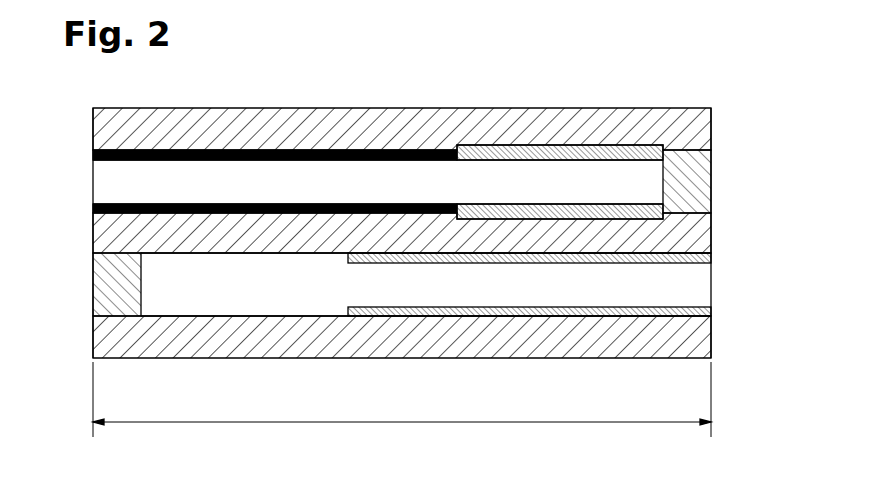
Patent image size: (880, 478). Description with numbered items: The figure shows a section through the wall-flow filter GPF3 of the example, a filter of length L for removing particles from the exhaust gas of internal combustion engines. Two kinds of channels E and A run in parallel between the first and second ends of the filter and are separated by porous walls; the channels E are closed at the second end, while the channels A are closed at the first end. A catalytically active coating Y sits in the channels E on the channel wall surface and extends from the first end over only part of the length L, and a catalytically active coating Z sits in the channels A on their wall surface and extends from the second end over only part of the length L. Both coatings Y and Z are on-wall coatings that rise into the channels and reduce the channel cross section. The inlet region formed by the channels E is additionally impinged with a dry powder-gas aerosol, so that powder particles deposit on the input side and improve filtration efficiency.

The catalytically active coating Y is at (93, 156).
The channels (inlet channels) E is at (413, 194).
The plug closing the first channel P is at (623, 150).
The channels (outlet channels) A is at (413, 297).
The catalytically active coating Z is at (711, 263).
The length of the wall-flow filter L is at (402, 399).